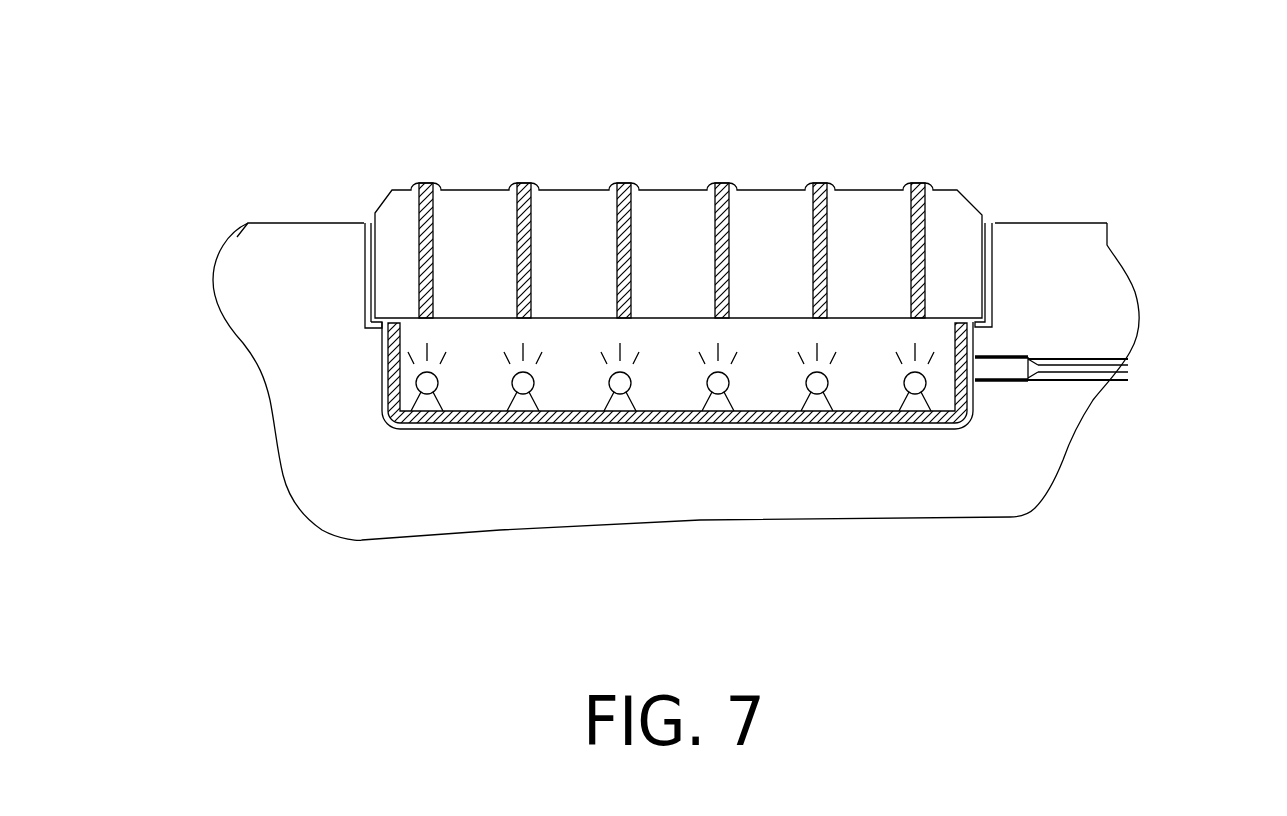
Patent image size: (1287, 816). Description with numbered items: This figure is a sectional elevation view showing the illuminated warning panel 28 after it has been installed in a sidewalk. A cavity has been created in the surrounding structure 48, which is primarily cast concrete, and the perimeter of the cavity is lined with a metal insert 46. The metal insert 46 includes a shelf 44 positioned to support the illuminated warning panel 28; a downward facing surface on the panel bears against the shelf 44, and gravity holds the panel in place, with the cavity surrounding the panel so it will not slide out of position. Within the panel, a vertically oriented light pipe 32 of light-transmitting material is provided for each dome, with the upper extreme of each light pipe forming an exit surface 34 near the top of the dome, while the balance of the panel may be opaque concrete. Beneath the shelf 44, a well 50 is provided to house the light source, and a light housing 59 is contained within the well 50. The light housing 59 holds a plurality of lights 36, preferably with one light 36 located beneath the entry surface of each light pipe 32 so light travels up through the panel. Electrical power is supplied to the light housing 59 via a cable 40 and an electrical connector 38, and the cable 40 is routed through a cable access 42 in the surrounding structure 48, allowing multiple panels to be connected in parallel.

The illuminated warning panel 28 is at (745, 179).
The light pipe 32 is at (735, 192).
The exit surface 34 is at (624, 183).
The light 36 is at (800, 405).
The electrical connector 38 is at (1003, 380).
The cable 40 is at (1113, 388).
The cable access 42 is at (1087, 355).
The shelf 44 is at (372, 327).
The metal insert 46 is at (367, 263).
The surrounding structure 48 is at (297, 278).
The well 50 is at (497, 430).
The light housing 59 is at (922, 430).